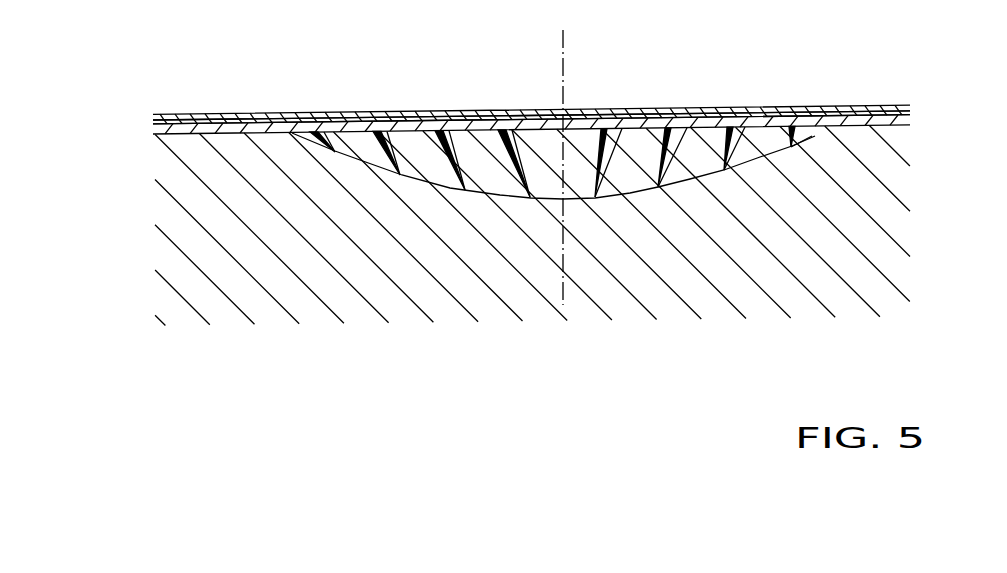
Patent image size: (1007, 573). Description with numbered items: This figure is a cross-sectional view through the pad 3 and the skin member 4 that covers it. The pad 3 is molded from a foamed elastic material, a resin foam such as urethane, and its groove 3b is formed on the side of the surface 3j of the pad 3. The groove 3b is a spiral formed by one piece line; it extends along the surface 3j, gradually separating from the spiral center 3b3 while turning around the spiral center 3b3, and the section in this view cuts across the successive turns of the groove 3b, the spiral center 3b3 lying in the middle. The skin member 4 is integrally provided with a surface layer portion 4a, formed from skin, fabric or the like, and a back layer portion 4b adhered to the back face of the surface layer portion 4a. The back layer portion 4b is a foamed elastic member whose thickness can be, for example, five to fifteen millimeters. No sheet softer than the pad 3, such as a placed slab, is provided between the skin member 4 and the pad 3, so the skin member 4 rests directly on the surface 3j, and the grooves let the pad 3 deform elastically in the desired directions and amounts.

The pad 3 is at (222, 263).
The groove 3b is at (397, 212).
The spiral center 3b3 is at (562, 63).
The surface 3j is at (213, 132).
The skin member 4 is at (485, 91).
The surface layer portion 4a is at (178, 118).
The back layer portion 4b is at (152, 127).